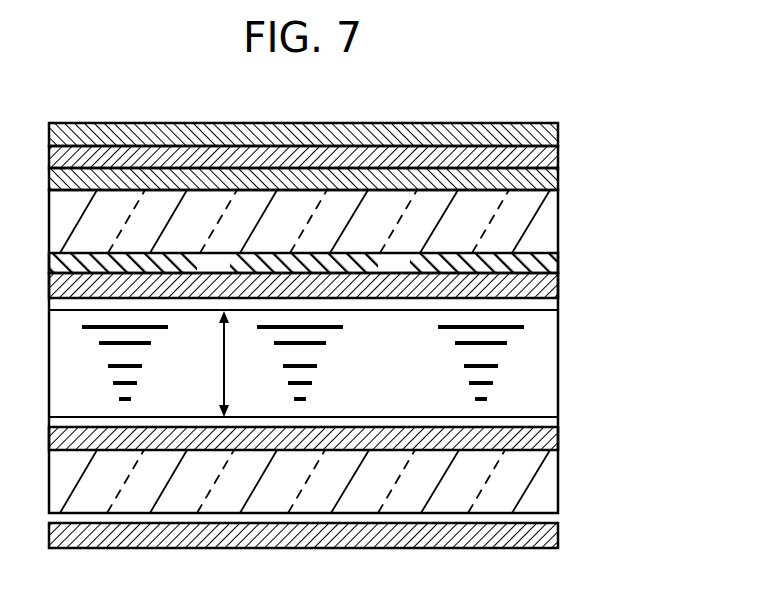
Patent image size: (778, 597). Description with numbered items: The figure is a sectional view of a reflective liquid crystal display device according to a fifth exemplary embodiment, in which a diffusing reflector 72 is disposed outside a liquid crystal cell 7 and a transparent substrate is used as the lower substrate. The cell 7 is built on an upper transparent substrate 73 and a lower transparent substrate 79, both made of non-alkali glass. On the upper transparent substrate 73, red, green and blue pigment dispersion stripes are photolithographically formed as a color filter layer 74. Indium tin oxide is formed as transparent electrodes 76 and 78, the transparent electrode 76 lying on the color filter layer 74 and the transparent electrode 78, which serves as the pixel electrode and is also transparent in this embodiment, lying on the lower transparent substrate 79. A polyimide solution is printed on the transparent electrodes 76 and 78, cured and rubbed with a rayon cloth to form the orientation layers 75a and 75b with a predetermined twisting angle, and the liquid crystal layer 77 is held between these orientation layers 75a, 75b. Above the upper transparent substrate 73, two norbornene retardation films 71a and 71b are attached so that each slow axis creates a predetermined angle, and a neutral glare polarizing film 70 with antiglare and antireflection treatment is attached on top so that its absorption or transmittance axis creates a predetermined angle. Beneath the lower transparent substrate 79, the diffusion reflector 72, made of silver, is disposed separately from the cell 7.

The liquid crystal cell 7 is at (683, 202).
The polarizing film 70 is at (558, 131).
The retardation film 71a is at (558, 153).
The retardation film 71b is at (558, 178).
The diffusing reflector 72 is at (558, 535).
The upper transparent substrate 73 is at (542, 224).
The color filter layer 74 is at (555, 263).
The orientation layer 75a is at (542, 303).
The orientation layer 75b is at (545, 422).
The transparent electrode 76 is at (558, 287).
The liquid crystal layer 77 is at (542, 365).
The transparent electrode 78 is at (558, 440).
The lower transparent substrate 79 is at (542, 483).